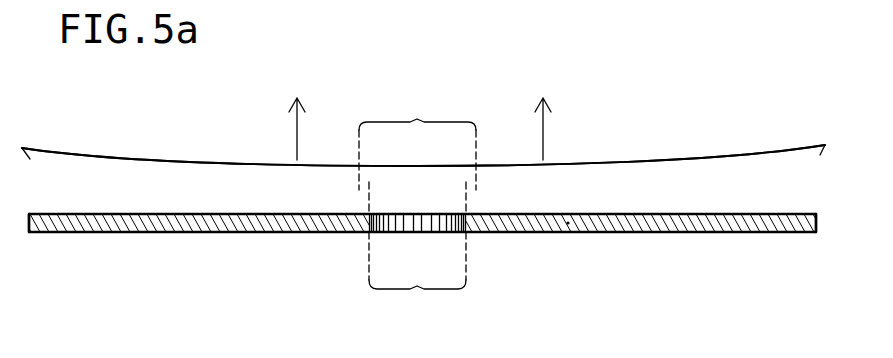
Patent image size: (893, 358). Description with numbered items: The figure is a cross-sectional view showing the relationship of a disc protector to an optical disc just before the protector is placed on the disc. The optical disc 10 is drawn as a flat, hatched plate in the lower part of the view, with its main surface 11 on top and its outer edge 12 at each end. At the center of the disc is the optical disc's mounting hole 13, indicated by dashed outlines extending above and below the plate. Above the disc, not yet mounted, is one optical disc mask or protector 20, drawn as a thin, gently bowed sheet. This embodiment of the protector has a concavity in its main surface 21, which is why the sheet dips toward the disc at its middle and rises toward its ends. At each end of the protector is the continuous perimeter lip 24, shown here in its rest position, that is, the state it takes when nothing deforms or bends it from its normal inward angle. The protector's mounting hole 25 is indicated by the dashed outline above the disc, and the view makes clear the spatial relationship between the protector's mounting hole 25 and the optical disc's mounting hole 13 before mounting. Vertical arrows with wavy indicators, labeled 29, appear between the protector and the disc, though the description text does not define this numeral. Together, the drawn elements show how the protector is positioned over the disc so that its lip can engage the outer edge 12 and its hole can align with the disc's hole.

The optical disc 10 is at (422, 263).
The main surface of the optical disc 11 is at (598, 213).
The outer edge of the optical disc 12 is at (30, 233).
The mounting hole of the optical disc 13 is at (418, 289).
The optical disc protector 20 is at (163, 157).
The main surface of the protector 21 is at (670, 160).
The continuous perimeter lip 24 is at (30, 159).
The mounting hole of the protector 25 is at (418, 120).
The lift direction arrows 29 is at (296, 128).